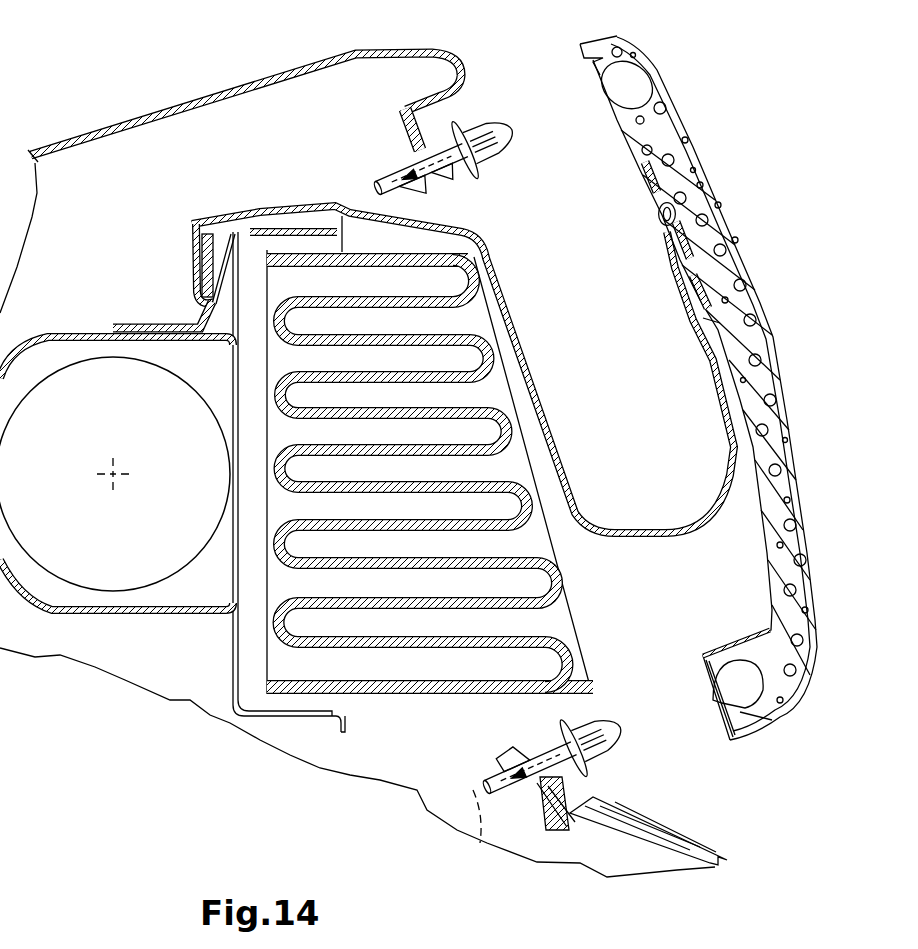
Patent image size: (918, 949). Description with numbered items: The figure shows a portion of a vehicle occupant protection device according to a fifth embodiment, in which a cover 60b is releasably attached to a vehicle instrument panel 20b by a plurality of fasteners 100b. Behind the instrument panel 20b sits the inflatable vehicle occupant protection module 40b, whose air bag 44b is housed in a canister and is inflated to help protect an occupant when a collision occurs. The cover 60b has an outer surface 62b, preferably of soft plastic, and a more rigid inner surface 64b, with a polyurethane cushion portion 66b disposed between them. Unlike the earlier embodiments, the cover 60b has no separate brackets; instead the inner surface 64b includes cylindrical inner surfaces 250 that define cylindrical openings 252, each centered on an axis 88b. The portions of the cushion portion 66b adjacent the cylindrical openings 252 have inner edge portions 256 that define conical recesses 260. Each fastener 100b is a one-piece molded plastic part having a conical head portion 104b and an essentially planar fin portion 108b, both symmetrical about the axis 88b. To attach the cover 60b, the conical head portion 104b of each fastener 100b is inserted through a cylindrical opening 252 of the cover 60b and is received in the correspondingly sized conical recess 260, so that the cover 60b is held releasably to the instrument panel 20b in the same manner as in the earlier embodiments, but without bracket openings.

The instrument panel 20b is at (207, 100).
The vehicle occupant protection module 40b is at (161, 268).
The air bag 44b is at (413, 642).
The cover 60b is at (713, 422).
The outer surface 62b is at (773, 333).
The inner surface 64b is at (767, 543).
The cushion portion 66b is at (767, 403).
The axis 88b is at (477, 848).
The fasteners 100b is at (478, 188).
The conical head portion 104b is at (612, 715).
The fin portion 108b is at (425, 128).
The cylindrical inner surfaces 250 is at (722, 707).
The cylindrical openings 252 is at (710, 683).
The inner edge portions 256 is at (757, 710).
The conical recesses 260 is at (747, 683).